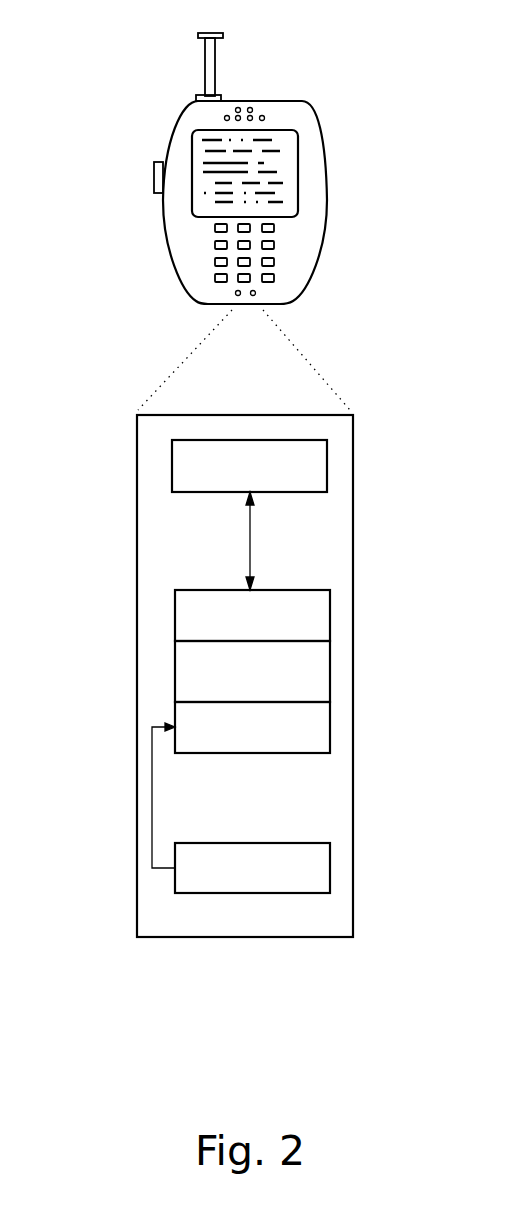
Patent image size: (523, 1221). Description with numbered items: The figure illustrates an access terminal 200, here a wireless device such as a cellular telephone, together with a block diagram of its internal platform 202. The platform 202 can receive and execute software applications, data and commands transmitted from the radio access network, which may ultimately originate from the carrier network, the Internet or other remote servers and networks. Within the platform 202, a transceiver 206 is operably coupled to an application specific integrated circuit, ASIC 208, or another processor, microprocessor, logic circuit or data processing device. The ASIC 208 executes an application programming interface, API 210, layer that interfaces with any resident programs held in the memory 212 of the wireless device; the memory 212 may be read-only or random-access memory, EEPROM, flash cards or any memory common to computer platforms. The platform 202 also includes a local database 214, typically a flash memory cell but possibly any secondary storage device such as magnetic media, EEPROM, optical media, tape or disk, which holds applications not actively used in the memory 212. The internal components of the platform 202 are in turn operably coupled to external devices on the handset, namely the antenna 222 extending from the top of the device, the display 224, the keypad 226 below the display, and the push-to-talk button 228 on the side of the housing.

The access terminal 200 is at (303, 283).
The platform 202 is at (137, 590).
The transceiver 206 is at (327, 465).
The application specific integrated circuit 208 is at (330, 622).
The application programming interface 210 is at (330, 667).
The memory 212 is at (330, 725).
The local database 214 is at (330, 853).
The antenna 222 is at (212, 45).
The display 224 is at (298, 160).
The keypad 226 is at (274, 244).
The push-to-talk button 228 is at (154, 172).